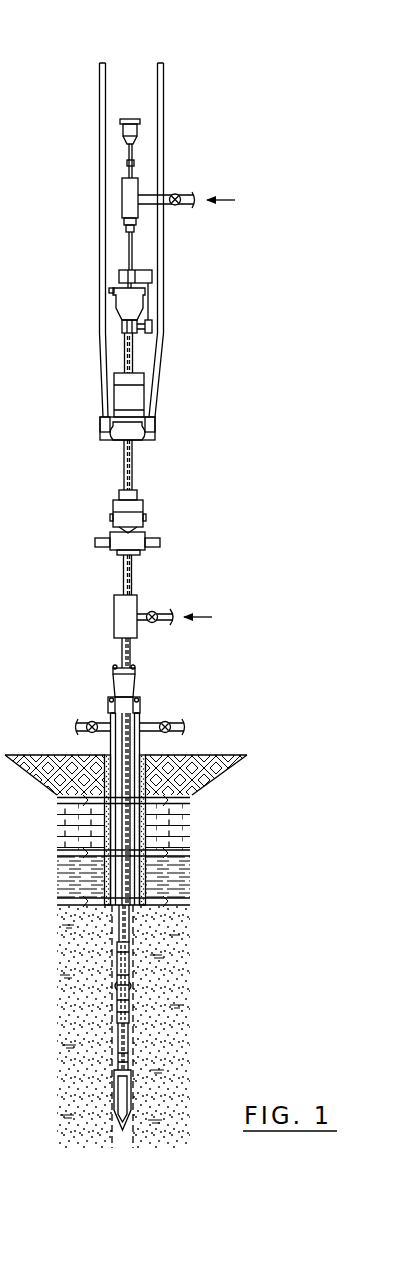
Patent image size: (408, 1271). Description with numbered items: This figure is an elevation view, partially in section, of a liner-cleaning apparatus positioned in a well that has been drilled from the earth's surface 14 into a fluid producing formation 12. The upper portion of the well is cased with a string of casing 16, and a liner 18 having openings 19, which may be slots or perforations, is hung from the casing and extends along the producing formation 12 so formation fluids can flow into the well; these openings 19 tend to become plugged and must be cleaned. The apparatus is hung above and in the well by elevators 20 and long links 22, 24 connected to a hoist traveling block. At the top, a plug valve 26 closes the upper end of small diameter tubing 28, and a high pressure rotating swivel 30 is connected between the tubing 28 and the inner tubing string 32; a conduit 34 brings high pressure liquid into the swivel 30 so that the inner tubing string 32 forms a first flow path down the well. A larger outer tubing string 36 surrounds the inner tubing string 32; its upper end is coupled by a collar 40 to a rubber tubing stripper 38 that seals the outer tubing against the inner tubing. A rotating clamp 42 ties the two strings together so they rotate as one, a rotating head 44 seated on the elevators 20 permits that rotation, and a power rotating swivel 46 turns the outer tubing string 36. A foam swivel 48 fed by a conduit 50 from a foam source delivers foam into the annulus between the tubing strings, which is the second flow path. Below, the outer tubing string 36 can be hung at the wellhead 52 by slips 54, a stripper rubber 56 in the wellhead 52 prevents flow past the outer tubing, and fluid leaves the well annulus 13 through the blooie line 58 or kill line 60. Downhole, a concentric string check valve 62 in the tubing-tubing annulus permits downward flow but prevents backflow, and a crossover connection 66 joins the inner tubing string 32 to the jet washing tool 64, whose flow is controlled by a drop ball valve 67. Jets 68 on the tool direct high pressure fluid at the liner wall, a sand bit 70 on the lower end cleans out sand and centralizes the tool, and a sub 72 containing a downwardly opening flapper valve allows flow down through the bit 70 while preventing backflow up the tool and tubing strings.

The fluid producing formation 12 is at (179, 1086).
The well annulus 13 is at (115, 745).
The earth's surface 14 is at (222, 755).
The string of casing 16 is at (108, 750).
The liner 18 is at (135, 955).
The openings 19 is at (133, 1025).
The elevators 20 is at (158, 428).
The long link 22 is at (100, 107).
The long link 24 is at (162, 112).
The plug valve 26 is at (133, 117).
The small diameter tubing 28 is at (128, 157).
The high pressure rotating swivel 30 is at (120, 197).
The inner tubing string 32 is at (128, 250).
The conduit 34 is at (148, 194).
The outer tubing string 36 is at (133, 360).
The rubber tubing stripper 38 is at (111, 302).
The collar 40 is at (122, 327).
The rotating clamp 42 is at (144, 268).
The rotating head 44 is at (118, 371).
The power rotating swivel 46 is at (145, 507).
The foam swivel 48 is at (112, 614).
The conduit 50 is at (175, 612).
The wellhead 52 is at (141, 700).
The slips 54 is at (110, 677).
The stripper rubber 56 is at (141, 702).
The blooie line 58 is at (181, 722).
The kill line 60 is at (78, 722).
The concentric string check valve 62 is at (118, 823).
The jet washing tool 64 is at (116, 962).
The crossover connection 66 is at (118, 880).
The drop ball valve 67 is at (114, 1035).
The jets 68 is at (116, 991).
The sand bit 70 is at (116, 1100).
The sub 72 is at (137, 1048).